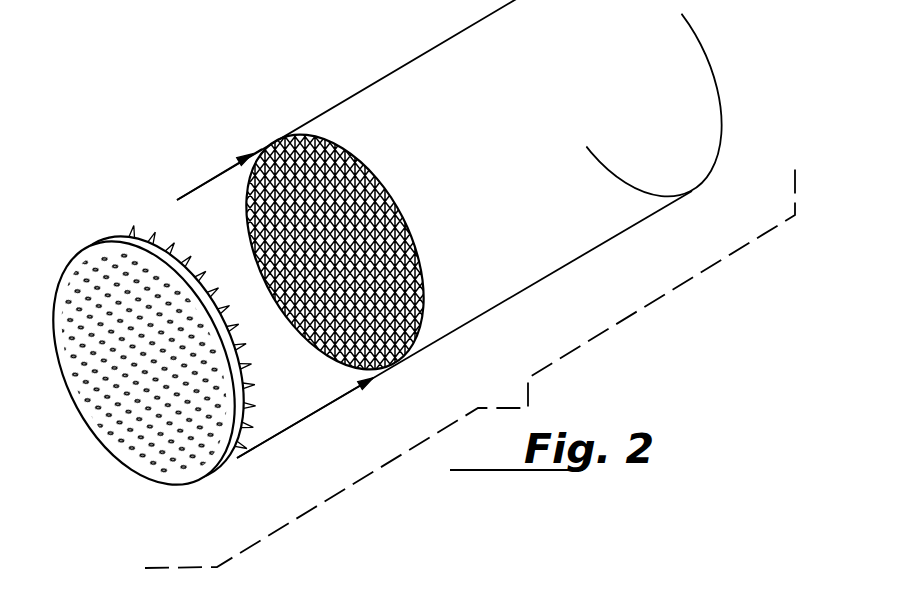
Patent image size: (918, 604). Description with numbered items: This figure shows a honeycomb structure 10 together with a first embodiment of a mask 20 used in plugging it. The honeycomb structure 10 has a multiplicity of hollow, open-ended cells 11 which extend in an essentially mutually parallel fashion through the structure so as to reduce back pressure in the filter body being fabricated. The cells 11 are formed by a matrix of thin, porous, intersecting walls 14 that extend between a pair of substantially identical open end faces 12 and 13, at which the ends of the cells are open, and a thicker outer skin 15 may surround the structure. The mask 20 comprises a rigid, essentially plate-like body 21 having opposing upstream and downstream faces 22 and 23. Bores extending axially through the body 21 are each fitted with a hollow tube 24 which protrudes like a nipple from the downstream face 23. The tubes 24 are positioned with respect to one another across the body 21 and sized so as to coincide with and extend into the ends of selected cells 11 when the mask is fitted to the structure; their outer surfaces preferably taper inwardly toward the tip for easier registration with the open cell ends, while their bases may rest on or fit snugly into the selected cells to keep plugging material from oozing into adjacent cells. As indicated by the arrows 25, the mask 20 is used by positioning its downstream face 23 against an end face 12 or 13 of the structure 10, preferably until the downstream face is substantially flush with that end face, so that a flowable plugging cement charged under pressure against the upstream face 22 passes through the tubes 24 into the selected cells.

The honeycomb structure 10 is at (610, 246).
The cells 11 is at (380, 187).
The end face 12 is at (177, 200).
The end face 13 is at (700, 48).
The walls 14 is at (417, 258).
The outer skin 15 is at (419, 95).
The mask 20 is at (173, 382).
The plate-like body 21 is at (105, 243).
The upstream face 22 is at (115, 412).
The downstream face 23 is at (247, 400).
The hollow tubes 24 is at (245, 372).
The arrows 25 is at (212, 178).